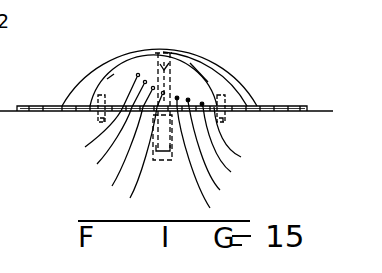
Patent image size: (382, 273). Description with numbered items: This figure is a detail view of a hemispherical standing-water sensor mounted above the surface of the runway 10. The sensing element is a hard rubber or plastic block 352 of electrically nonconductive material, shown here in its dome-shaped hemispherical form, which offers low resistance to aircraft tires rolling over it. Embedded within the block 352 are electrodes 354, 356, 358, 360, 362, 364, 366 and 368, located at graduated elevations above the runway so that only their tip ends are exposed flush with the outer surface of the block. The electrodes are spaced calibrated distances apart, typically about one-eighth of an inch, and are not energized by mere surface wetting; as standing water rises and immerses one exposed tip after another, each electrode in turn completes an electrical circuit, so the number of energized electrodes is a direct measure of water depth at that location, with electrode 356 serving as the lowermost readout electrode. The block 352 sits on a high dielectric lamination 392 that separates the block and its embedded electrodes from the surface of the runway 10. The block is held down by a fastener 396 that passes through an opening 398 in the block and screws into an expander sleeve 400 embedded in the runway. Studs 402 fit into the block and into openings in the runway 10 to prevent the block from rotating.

The runway 10 is at (319, 108).
The block 352 is at (223, 72).
The electrode 354 is at (245, 135).
The electrode 356 is at (235, 142).
The electrode 358 is at (223, 148).
The electrode 360 is at (212, 157).
The electrode 362 is at (135, 153).
The electrode 364 is at (116, 143).
The electrode 366 is at (105, 131).
The electrode 368 is at (92, 119).
The high dielectric lamination 392 is at (283, 107).
The fastener 396 is at (172, 77).
The opening 398 is at (162, 51).
The expander sleeve 400 is at (165, 161).
The stud 402 is at (99, 117).